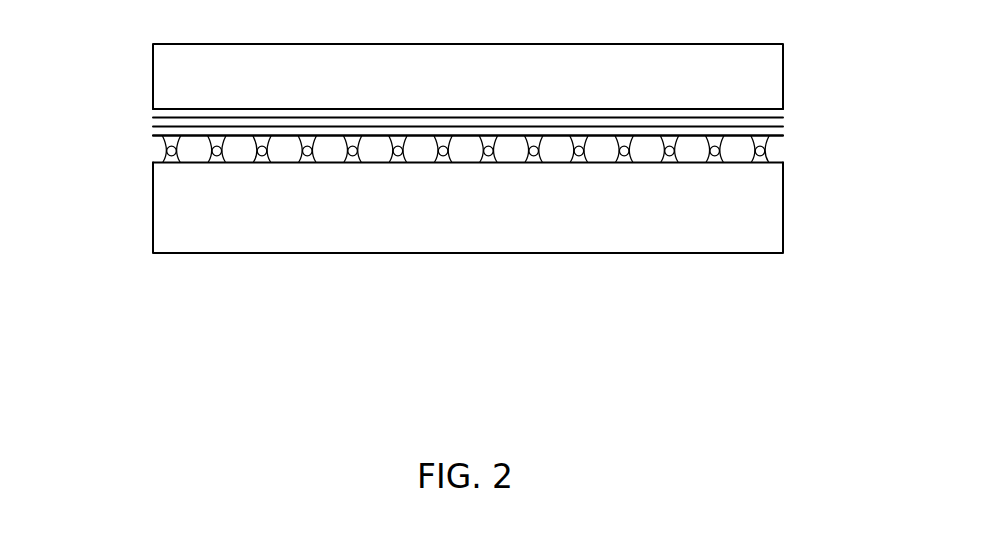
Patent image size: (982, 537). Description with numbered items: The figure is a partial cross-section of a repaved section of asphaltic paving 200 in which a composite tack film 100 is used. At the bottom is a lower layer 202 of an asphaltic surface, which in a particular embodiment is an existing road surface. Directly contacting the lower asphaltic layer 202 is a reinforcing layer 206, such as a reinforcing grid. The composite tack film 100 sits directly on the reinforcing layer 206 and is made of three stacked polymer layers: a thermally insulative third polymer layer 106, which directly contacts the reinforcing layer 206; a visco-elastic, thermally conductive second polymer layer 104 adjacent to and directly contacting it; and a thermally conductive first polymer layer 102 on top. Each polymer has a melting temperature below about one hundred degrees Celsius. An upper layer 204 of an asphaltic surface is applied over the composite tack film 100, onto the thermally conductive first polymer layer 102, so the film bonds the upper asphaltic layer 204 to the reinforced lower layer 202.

The composite tack film 100 is at (445, 125).
The first polymer layer 102 is at (152, 109).
The second polymer layer 104 is at (152, 118).
The third polymer layer 106 is at (152, 136).
The asphaltic paving 200 is at (490, 333).
The lower layer of an asphaltic surface 202 is at (785, 217).
The upper layer of an asphaltic surface 204 is at (785, 68).
The reinforcing layer 206 is at (785, 151).